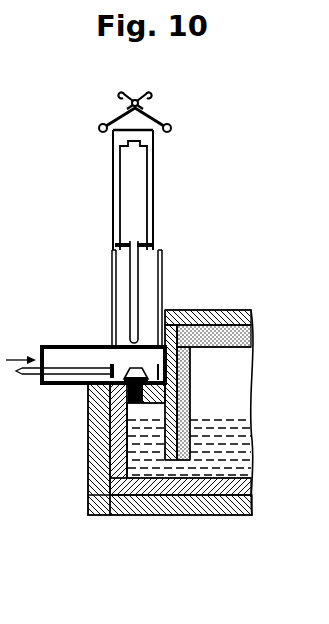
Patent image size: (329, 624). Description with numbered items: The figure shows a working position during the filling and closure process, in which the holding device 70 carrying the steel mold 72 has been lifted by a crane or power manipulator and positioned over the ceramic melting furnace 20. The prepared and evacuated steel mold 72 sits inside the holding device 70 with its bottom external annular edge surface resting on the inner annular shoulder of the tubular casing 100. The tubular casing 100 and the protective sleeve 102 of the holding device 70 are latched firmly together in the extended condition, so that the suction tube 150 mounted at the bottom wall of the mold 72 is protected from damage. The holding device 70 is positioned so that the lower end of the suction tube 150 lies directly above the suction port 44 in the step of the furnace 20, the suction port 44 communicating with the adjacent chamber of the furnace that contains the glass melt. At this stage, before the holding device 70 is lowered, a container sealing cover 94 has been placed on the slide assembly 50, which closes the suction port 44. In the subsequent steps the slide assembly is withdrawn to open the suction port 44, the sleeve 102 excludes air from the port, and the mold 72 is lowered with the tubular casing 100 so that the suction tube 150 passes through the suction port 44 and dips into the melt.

The ceramic melting furnace 20 is at (238, 302).
The suction port 44 is at (125, 397).
The inlet housing 50 is at (97, 338).
The holding device 70 is at (166, 226).
The steel mold 72 is at (154, 157).
The container sealing cover 94 is at (133, 366).
The tubular casing 100 is at (154, 192).
The protective sleeve 102 is at (162, 266).
The suction tube 150 is at (143, 297).